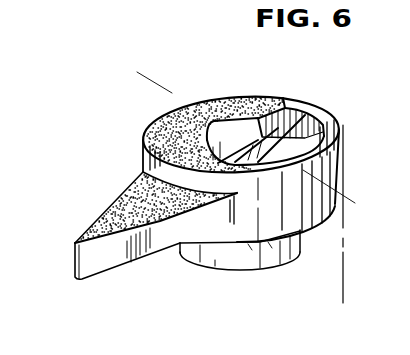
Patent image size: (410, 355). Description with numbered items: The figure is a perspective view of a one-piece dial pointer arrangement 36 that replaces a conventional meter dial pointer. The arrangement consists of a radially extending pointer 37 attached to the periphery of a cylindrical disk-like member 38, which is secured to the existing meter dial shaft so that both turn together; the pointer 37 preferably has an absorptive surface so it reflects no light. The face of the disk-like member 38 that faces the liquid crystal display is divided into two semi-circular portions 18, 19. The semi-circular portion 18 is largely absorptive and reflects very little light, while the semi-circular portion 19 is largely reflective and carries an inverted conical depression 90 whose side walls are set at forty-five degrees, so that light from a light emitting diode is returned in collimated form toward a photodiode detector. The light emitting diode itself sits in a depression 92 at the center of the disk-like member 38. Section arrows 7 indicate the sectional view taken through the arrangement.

The section line 7- 7 is at (140, 70).
The semi-circular portion 18 is at (175, 128).
The semi-circular portion 19 is at (321, 121).
The dial pointer arrangement 36 is at (131, 139).
The pointer 37 is at (115, 272).
The cylindrical disk-like member 38 is at (235, 97).
The inverted conical depression 90 is at (340, 128).
The depression 92 is at (230, 140).